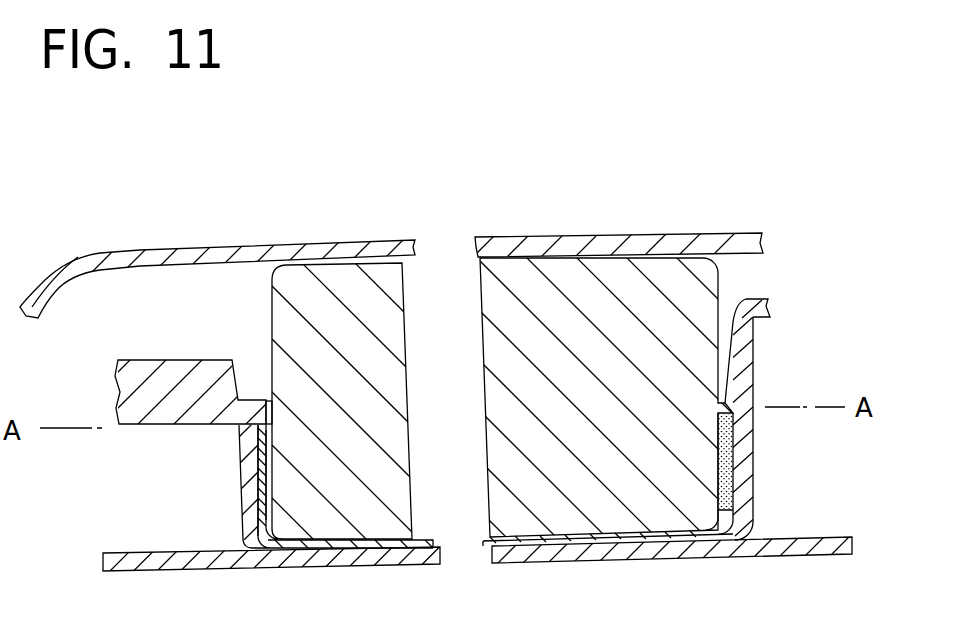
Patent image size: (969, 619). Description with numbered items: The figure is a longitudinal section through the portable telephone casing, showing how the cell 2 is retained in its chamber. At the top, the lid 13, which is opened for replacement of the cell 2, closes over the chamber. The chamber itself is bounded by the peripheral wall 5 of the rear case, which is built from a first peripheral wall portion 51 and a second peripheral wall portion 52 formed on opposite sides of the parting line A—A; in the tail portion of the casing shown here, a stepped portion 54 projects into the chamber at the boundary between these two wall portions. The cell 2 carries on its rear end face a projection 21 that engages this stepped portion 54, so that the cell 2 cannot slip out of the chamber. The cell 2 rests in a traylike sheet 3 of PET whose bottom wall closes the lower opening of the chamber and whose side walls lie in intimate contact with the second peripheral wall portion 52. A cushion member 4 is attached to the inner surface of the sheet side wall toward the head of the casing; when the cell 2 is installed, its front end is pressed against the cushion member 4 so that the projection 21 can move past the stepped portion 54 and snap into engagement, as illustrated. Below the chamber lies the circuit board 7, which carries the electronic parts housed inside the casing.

The lid 13 is at (280, 250).
The cell 2 is at (362, 275).
The first peripheral wall portion 51 is at (225, 365).
The stepped portion 54 is at (263, 412).
The peripheral wall 5 is at (250, 453).
The second peripheral wall portion 52 is at (247, 518).
The projection 21 is at (270, 437).
The circuit board 7 is at (205, 562).
The traylike sheet 3 is at (632, 543).
The cushion member 4 is at (710, 540).